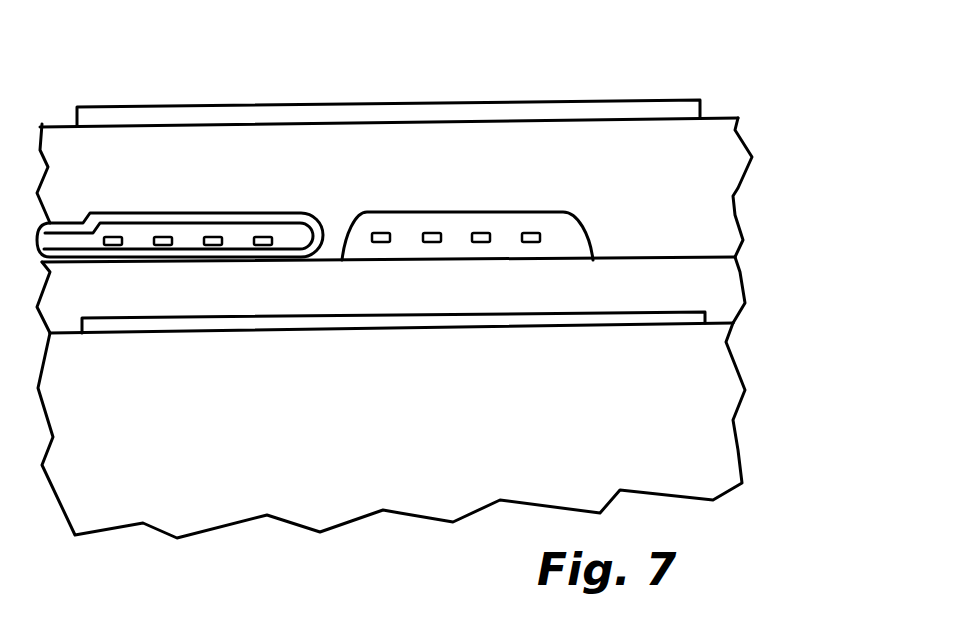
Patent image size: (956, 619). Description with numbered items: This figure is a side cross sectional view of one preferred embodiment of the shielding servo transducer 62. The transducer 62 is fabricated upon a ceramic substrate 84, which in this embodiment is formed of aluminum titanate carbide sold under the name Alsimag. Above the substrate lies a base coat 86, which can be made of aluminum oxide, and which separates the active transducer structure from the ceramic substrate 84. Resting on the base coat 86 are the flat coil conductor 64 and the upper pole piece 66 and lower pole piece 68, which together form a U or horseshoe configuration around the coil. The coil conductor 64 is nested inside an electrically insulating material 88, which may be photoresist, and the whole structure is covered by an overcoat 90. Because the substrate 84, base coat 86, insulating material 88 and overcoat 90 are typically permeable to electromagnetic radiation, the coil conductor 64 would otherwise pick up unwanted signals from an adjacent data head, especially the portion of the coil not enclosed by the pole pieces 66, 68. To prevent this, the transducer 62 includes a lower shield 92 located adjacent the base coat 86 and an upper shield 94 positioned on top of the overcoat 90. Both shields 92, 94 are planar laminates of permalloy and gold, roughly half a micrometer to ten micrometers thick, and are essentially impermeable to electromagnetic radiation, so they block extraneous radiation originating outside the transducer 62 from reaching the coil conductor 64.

The transducer 62 is at (650, 69).
The coil conductor 64 is at (482, 232).
The upper pole piece 66 is at (217, 215).
The lower pole piece 68 is at (223, 258).
The ceramic substrate 84 is at (700, 418).
The base coat 86 is at (700, 283).
The insulating material 88 is at (583, 240).
The overcoat 90 is at (677, 150).
The lower shield 92 is at (173, 327).
The upper shield 94 is at (380, 115).